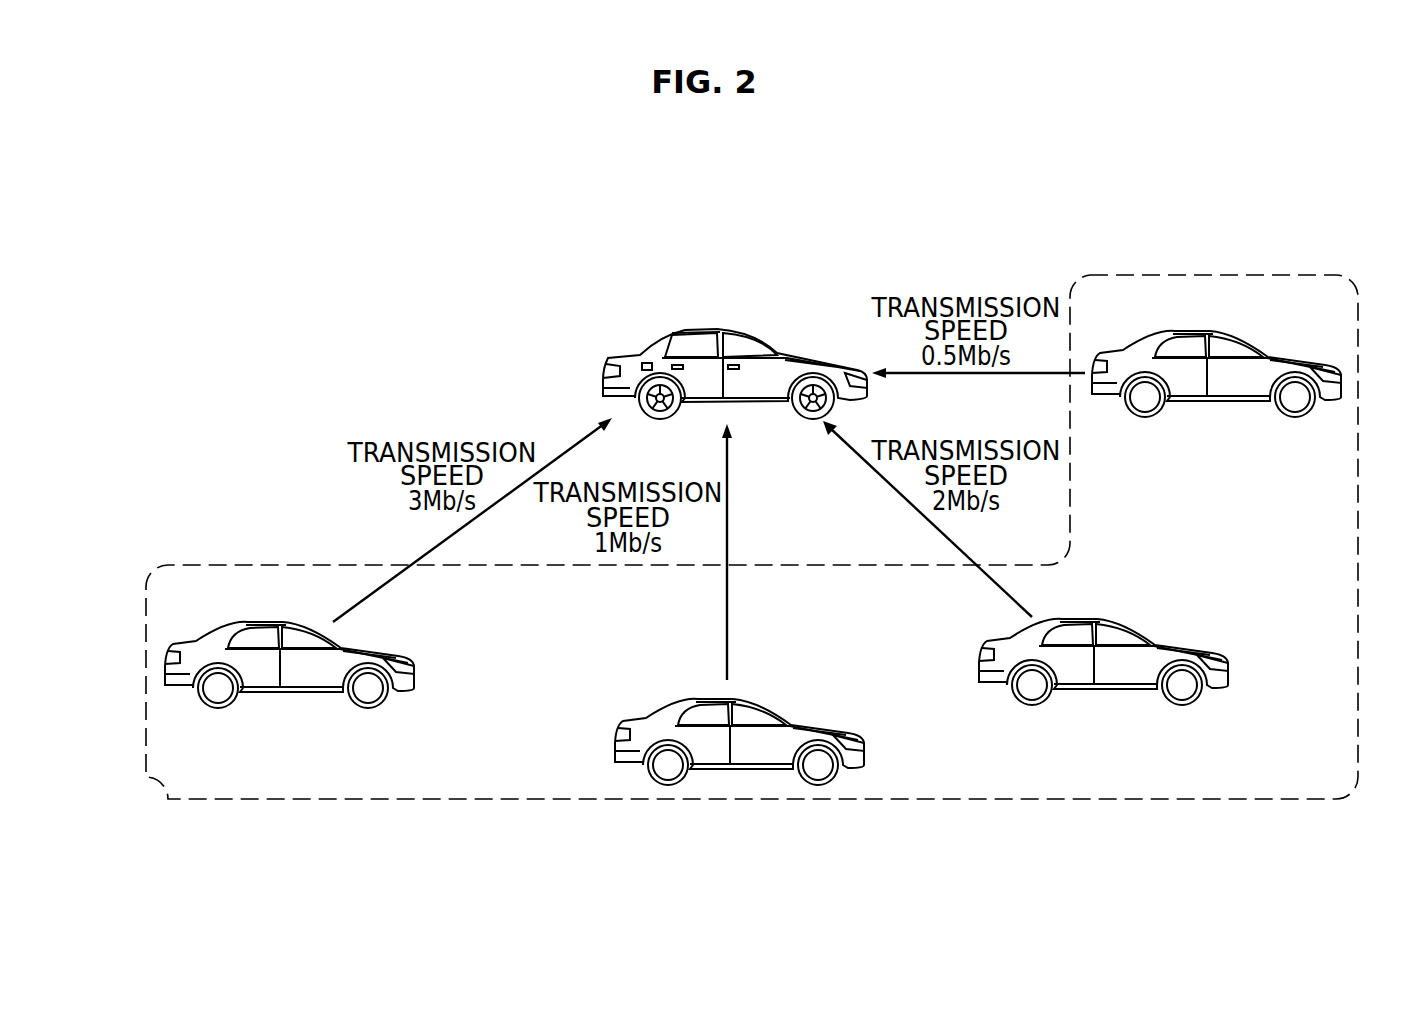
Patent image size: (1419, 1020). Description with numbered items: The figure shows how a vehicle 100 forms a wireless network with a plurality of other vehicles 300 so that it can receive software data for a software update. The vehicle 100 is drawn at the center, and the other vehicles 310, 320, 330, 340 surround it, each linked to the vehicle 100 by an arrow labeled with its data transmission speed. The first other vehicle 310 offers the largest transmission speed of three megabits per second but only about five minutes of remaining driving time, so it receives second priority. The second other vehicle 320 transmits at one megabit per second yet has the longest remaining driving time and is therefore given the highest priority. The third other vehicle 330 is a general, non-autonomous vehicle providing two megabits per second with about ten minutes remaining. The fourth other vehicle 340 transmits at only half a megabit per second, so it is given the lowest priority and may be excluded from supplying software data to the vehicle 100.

The vehicle 100 is at (731, 328).
The plurality of other vehicles 300 is at (1213, 275).
The first other vehicle 310 is at (302, 620).
The second other vehicle 320 is at (752, 700).
The third other vehicle 330 is at (1119, 622).
The fourth other vehicle 340 is at (1234, 332).